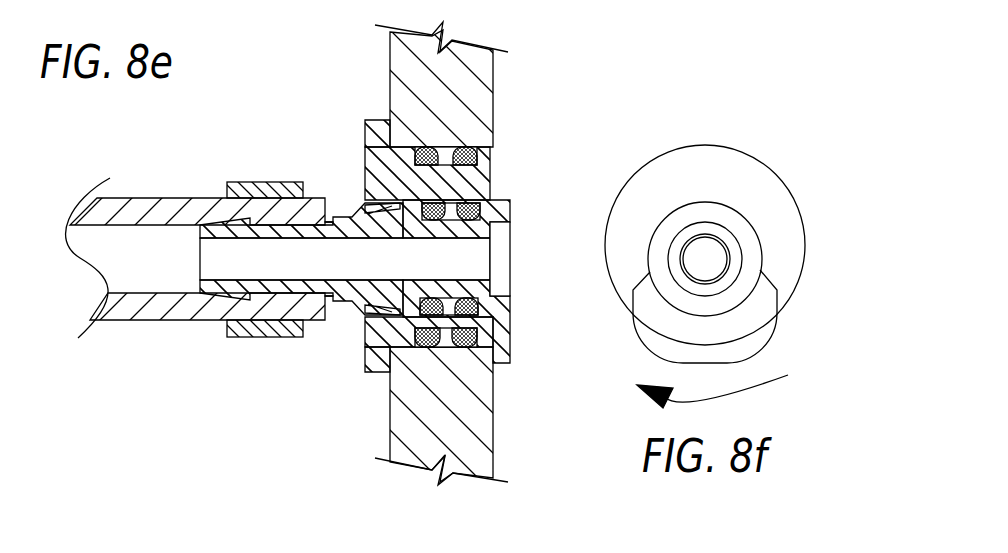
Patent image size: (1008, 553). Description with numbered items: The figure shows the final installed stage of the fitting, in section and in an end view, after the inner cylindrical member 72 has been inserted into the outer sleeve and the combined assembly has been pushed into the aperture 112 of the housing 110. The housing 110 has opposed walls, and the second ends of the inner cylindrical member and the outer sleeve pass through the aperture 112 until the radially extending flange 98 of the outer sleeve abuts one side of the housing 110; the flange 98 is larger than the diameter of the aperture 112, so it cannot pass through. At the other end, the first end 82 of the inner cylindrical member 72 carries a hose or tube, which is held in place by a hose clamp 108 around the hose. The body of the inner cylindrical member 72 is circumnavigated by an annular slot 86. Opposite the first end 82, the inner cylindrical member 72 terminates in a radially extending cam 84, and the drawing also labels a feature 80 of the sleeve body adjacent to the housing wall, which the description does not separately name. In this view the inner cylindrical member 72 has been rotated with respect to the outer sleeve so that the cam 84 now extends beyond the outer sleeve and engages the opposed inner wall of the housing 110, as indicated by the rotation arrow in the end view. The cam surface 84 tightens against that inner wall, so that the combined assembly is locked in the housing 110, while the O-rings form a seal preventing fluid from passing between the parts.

In FIG. 8e, the inner cylindrical member 72 is at (510, 242).
In FIG. 8e, the bushing 80 is at (483, 333).
In FIG. 8e, the first end 82 is at (199, 258).
In FIG. 8e, the cam 84 is at (505, 352).
In FIG. 8f, the cam 84 is at (763, 320).
In FIG. 8e, the annular slot 86 is at (383, 203).
In FIG. 8e, the radially extending flange 98 is at (376, 127).
In FIG. 8e, the hose clamp 108 is at (265, 182).
In FIG. 8e, the housing 110 is at (484, 398).
In FIG. 8e, the aperture 112 is at (450, 144).